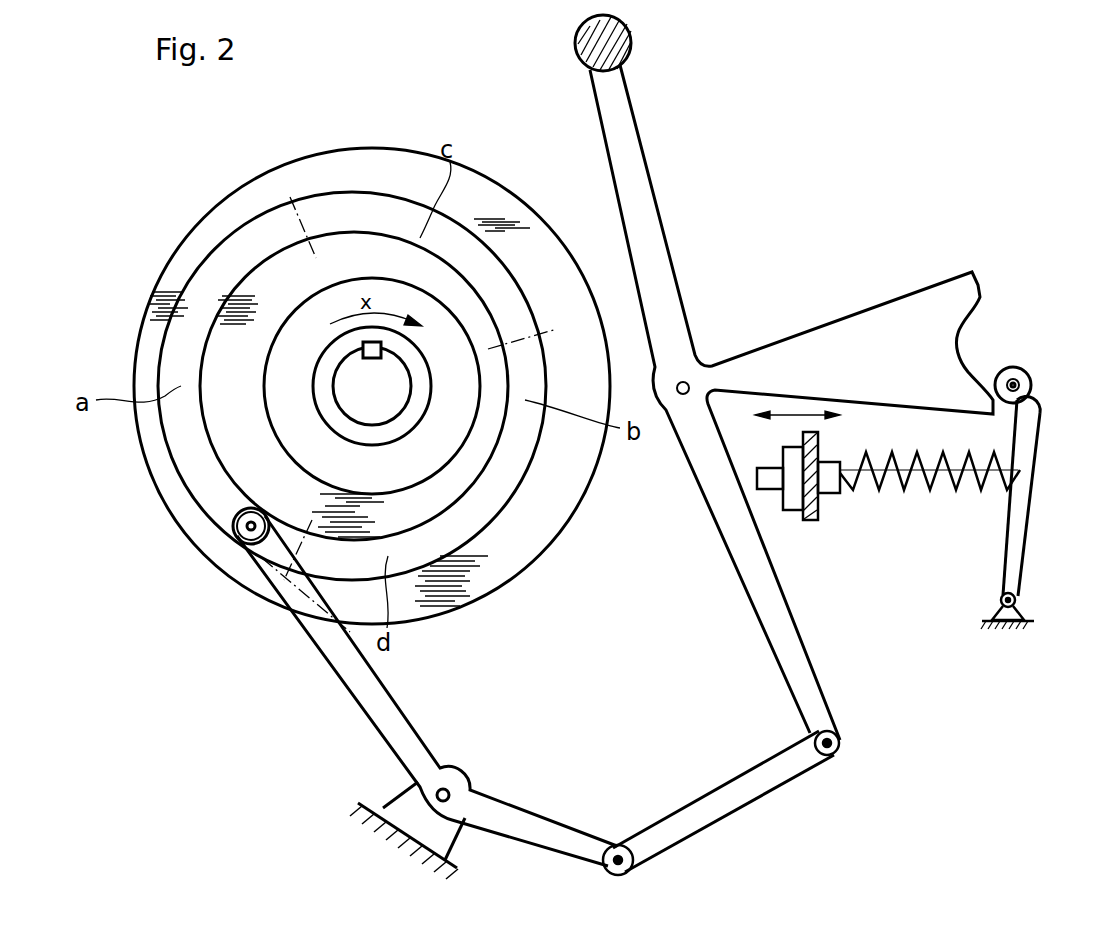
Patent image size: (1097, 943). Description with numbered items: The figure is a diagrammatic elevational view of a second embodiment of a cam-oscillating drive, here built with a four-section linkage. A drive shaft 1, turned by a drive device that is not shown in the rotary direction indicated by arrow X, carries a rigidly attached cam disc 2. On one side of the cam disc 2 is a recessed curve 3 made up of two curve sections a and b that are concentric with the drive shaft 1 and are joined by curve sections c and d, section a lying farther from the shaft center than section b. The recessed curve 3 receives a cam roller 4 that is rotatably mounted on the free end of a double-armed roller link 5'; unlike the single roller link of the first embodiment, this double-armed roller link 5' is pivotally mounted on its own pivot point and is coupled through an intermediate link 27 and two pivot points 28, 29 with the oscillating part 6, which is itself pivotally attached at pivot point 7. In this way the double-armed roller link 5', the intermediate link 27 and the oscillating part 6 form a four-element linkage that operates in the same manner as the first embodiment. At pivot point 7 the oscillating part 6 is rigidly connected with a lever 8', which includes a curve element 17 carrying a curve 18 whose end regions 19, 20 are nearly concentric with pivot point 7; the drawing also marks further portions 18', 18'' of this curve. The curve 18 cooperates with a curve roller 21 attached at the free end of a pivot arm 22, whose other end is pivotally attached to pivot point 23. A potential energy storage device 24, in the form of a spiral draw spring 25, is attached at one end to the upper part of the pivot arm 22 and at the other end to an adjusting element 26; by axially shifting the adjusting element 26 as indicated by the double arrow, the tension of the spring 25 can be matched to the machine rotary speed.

The drive shaft 1 is at (345, 392).
The cam disc 2 is at (236, 556).
The recessed curve 3 is at (457, 522).
The cam roller 4 is at (228, 526).
The double-armed roller link 5' is at (365, 693).
The oscillating part 6 is at (666, 255).
The pivot point 7 is at (680, 397).
The lever 8' is at (836, 312).
The curve element 17 is at (880, 322).
The curve 18 is at (1019, 298).
The edge portion 18' is at (1032, 369).
The edge portion 18'' is at (1026, 336).
The end region 19 is at (975, 278).
The end region 20 is at (1038, 414).
The curve roller 21 is at (1024, 380).
The pivot arm 22 is at (1030, 510).
The pivot point 23 is at (1016, 592).
The potential energy storage device 24 is at (898, 498).
The spiral draw spring 25 is at (970, 492).
The adjusting element 26 is at (832, 480).
The intermediate link 27 is at (750, 790).
The pivot point 28 is at (840, 742).
The pivot point 29 is at (640, 858).